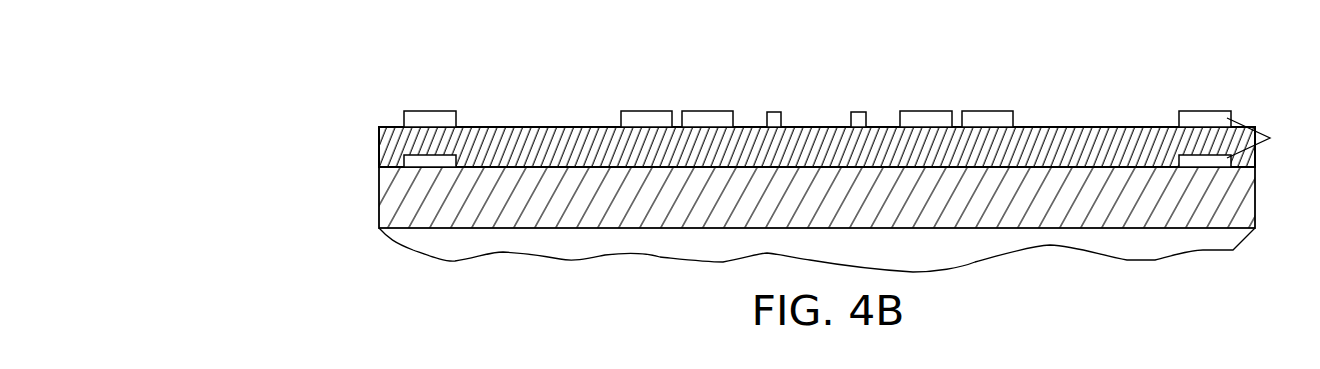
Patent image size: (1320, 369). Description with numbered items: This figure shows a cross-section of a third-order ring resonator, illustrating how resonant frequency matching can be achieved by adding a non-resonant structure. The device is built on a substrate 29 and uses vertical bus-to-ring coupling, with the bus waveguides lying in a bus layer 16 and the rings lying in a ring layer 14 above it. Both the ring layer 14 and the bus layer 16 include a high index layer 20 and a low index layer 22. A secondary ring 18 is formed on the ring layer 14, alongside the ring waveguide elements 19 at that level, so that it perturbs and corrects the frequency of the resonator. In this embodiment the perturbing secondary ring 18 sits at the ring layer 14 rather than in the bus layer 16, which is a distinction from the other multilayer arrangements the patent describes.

The ring layer 14 is at (364, 118).
The bus layer 16 is at (364, 162).
The secondary ring 18 is at (772, 112).
The bond pad 19 is at (431, 111).
The high index layer 20 is at (1270, 138).
The low index layer 22 is at (1238, 192).
The substrate 29 is at (1240, 237).